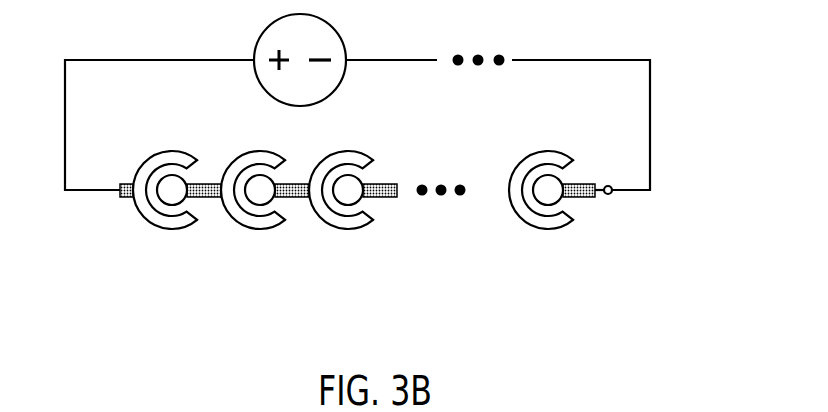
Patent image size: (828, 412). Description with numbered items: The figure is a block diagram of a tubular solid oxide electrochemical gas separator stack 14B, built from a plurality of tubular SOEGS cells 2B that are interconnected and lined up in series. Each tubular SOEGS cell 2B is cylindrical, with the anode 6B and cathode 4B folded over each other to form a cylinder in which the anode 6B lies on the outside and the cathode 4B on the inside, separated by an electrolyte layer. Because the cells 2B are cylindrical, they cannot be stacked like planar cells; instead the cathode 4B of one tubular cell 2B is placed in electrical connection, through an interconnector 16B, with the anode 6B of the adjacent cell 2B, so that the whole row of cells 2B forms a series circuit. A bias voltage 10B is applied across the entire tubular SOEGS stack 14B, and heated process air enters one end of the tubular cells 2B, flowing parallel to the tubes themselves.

The bias voltage 10B is at (330, 24).
The tubular SOEGS cell 2B is at (150, 175).
The cathode 4B is at (175, 156).
The anode 6B is at (150, 151).
The interconnector 16B is at (212, 183).
The tubular SOEGS stack 14B is at (648, 265).